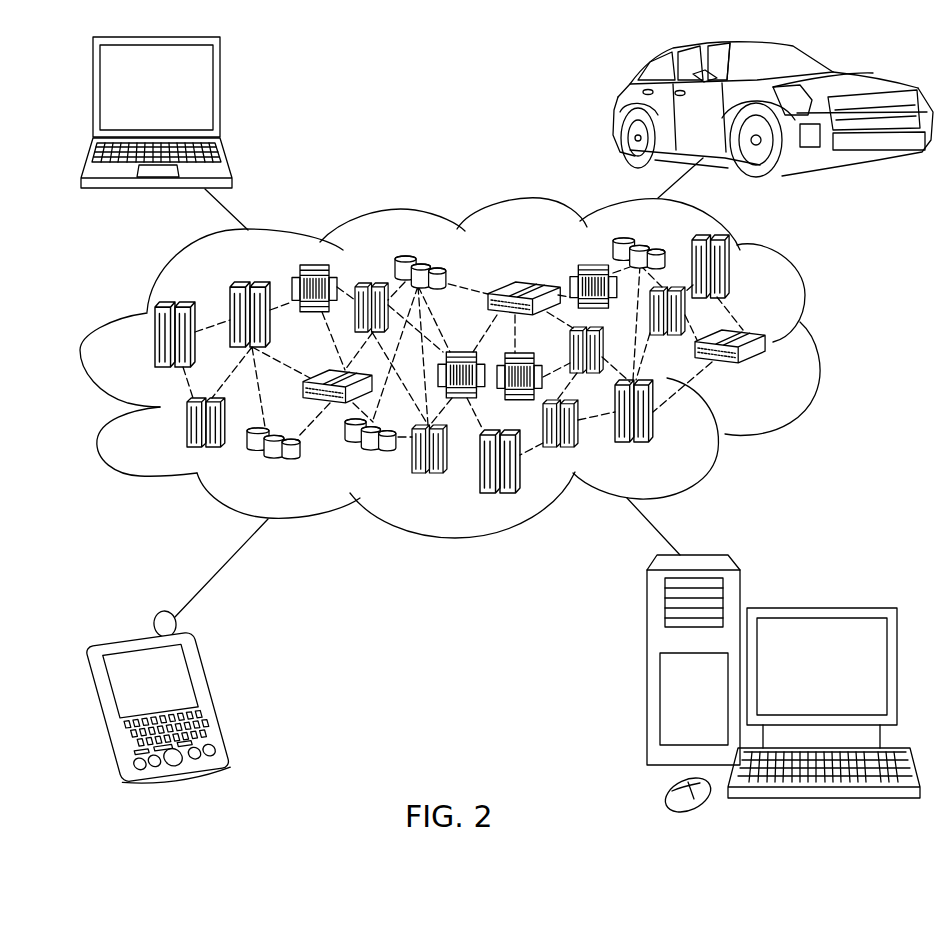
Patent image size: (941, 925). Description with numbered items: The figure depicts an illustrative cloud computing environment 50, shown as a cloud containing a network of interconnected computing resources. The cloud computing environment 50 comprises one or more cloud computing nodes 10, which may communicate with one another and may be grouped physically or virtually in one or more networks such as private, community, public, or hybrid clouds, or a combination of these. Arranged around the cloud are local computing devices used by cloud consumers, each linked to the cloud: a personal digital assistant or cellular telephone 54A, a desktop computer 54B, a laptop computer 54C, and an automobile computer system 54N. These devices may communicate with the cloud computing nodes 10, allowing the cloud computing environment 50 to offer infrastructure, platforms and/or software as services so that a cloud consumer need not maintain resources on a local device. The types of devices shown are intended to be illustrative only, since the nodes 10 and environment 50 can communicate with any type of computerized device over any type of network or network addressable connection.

The cloud computing node 10 is at (767, 372).
The cloud computing environment 50 is at (476, 368).
The personal digital assistant (PDA) or cellular telephone 54A is at (207, 693).
The desktop computer 54B is at (818, 608).
The laptop computer 54C is at (220, 93).
The automobile computer system 54N is at (620, 108).